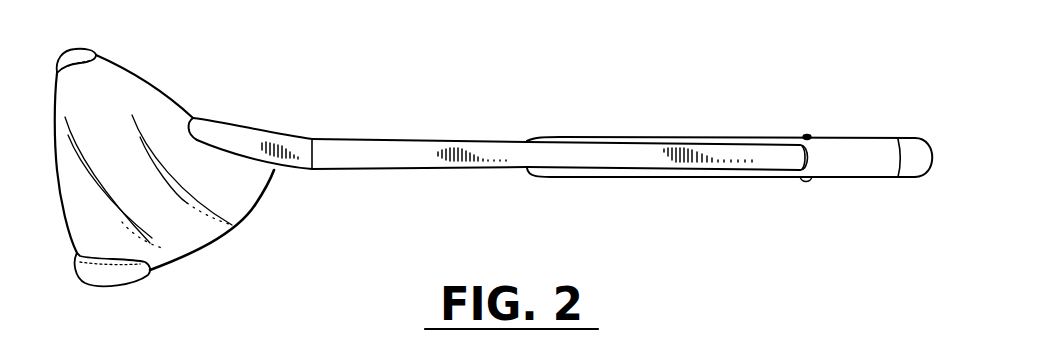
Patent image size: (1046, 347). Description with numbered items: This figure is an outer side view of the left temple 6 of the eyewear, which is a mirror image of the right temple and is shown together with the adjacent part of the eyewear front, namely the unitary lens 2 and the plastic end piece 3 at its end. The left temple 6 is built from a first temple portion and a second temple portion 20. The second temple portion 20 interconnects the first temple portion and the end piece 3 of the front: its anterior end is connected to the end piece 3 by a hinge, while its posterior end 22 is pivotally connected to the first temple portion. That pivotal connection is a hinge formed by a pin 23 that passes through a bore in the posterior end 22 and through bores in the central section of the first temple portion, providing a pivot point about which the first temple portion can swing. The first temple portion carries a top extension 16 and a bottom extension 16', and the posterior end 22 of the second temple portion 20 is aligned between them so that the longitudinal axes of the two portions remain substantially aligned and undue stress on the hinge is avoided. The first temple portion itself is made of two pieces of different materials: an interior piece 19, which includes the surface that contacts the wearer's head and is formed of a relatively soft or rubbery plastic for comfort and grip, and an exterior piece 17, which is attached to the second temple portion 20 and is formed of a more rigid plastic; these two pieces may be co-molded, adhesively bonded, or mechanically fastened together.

The unitary lens 2 is at (160, 90).
The end piece 3 is at (287, 137).
The second temple portion 20 is at (377, 164).
The left temple 6 is at (469, 184).
The top extension 16 is at (721, 126).
The bottom extension 16' is at (721, 200).
The exterior piece 17 is at (888, 160).
The interior piece 19 is at (913, 150).
The posterior end 22 is at (804, 157).
The pin 23 is at (808, 135).